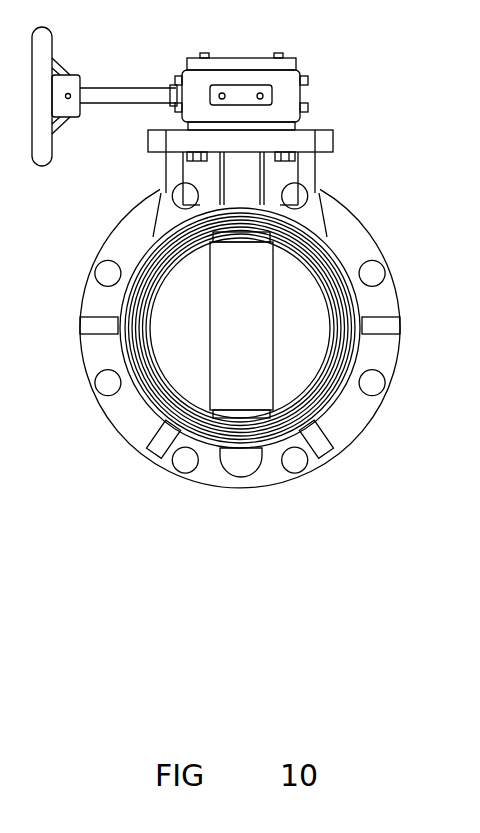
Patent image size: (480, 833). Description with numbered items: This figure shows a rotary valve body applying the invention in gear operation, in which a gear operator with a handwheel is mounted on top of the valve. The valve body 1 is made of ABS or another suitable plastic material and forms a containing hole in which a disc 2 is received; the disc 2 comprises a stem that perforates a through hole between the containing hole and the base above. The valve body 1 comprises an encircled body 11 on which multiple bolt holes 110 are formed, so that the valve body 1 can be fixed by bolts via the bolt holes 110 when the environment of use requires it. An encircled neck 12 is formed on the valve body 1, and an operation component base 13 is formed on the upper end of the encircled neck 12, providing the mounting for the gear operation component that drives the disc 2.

The valve body 1 is at (246, 367).
The encircled body 11 is at (348, 428).
The bolt holes 110 is at (170, 195).
The disc 2 is at (170, 365).
The encircled neck 12 is at (312, 168).
The operation component base 13 is at (308, 140).